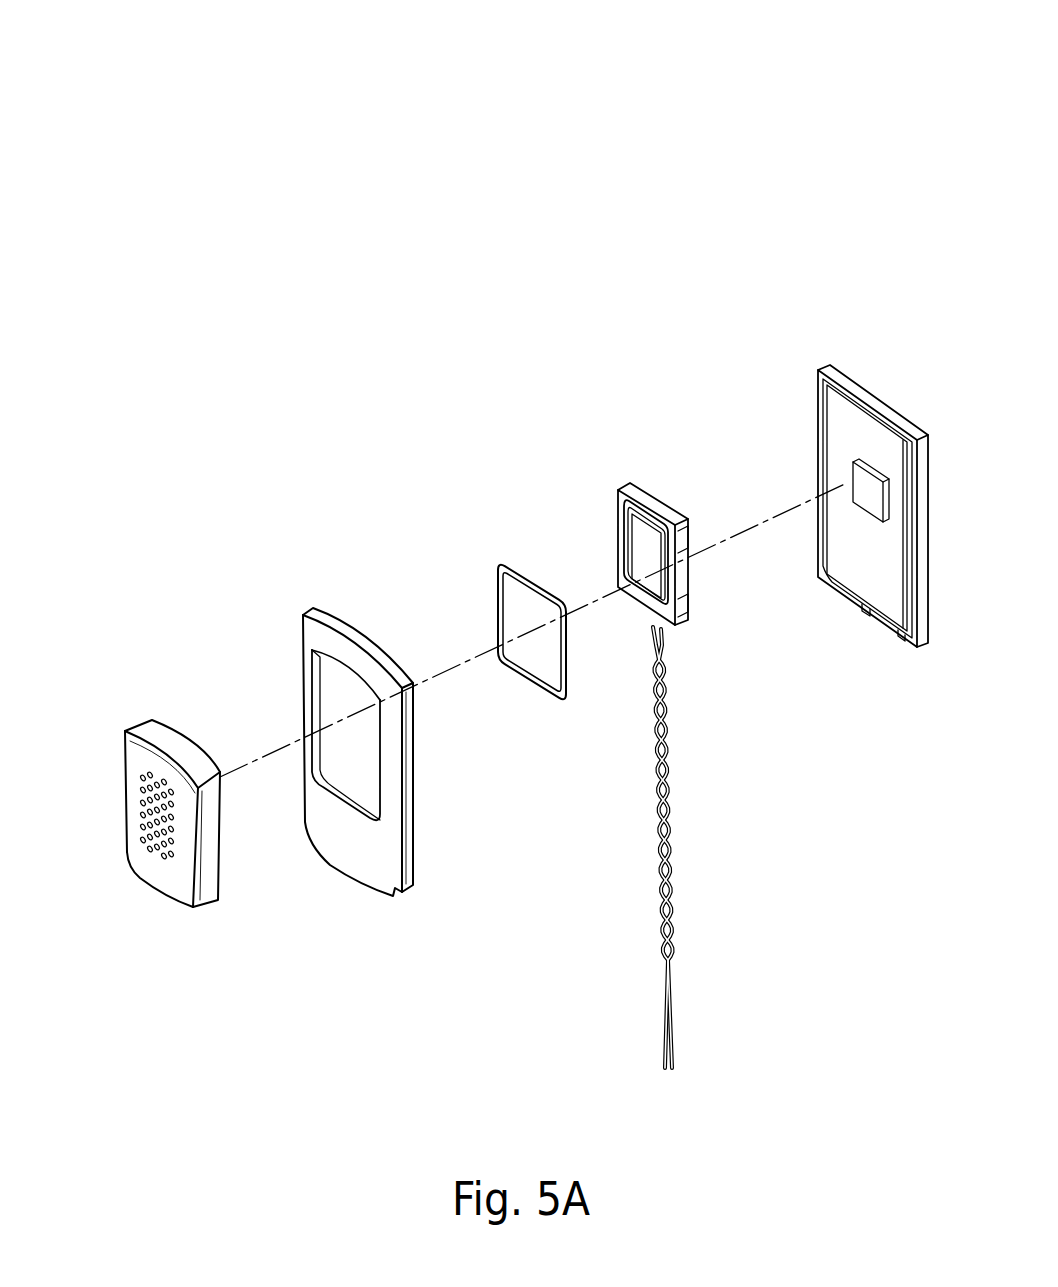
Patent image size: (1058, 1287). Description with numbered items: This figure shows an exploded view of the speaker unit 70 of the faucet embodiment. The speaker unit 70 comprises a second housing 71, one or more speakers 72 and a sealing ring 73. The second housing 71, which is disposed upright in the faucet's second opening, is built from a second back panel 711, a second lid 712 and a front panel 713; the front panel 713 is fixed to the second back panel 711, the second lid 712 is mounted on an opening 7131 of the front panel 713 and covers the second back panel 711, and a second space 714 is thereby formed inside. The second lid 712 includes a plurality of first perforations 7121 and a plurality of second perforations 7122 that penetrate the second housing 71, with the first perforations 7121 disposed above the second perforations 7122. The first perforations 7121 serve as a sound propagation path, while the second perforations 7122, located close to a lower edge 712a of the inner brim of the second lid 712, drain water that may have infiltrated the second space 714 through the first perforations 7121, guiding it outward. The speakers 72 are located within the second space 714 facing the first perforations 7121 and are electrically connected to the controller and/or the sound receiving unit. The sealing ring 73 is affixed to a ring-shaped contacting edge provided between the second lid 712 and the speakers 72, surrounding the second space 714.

The speaker unit 70 is at (131, 41).
The second housing 71 is at (473, 647).
The second back panel 711 is at (828, 378).
The second lid 712 is at (157, 747).
The first perforations 7121 is at (143, 775).
The second perforations 7122 is at (143, 857).
The lower edge 712a is at (153, 887).
The front panel 713 is at (353, 657).
The opening 7131 is at (356, 776).
The second space 714 is at (575, 725).
The speaker 72 is at (657, 512).
The sealing ring 73 is at (527, 688).